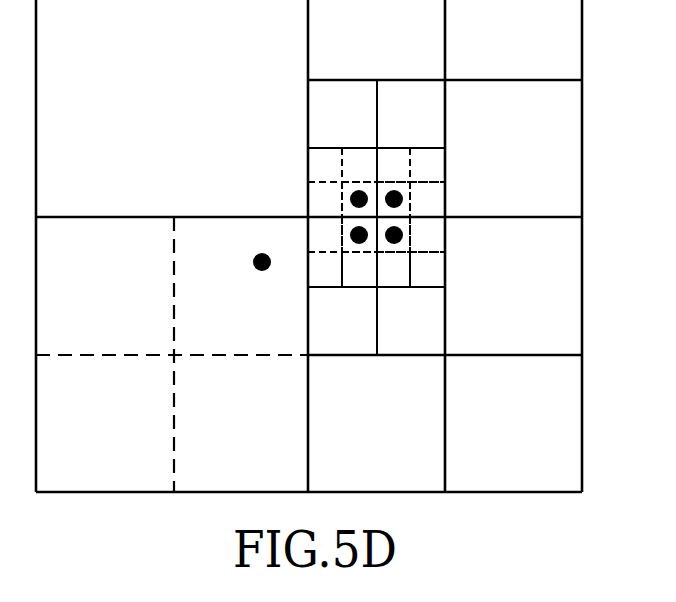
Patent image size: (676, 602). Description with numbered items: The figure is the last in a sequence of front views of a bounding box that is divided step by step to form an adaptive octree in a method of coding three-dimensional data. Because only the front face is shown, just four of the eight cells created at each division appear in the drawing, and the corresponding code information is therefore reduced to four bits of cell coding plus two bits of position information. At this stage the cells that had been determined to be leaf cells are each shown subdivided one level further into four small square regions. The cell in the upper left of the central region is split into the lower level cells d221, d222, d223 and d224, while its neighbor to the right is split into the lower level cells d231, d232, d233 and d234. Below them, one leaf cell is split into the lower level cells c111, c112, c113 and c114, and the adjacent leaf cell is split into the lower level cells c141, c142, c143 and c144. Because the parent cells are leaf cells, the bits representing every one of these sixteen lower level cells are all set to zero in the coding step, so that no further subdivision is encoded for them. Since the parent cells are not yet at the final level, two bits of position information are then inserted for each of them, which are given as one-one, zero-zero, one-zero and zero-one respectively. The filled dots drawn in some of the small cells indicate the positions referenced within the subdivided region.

The lower level cell d221 is at (308, 166).
The lower level cell d222 is at (308, 200).
The lower level cell d223 is at (350, 182).
The lower level cell d224 is at (358, 146).
The lower level cell d231 is at (395, 146).
The lower level cell d232 is at (405, 182).
The lower level cell d233 is at (445, 200).
The lower level cell d234 is at (445, 166).
The lower level cell c111 is at (308, 236).
The lower level cell c112 is at (350, 250).
The lower level cell c113 is at (360, 290).
The lower level cell c114 is at (338, 288).
The lower level cell c141 is at (405, 250).
The lower level cell c142 is at (393, 290).
The lower level cell c143 is at (445, 272).
The lower level cell c144 is at (445, 236).